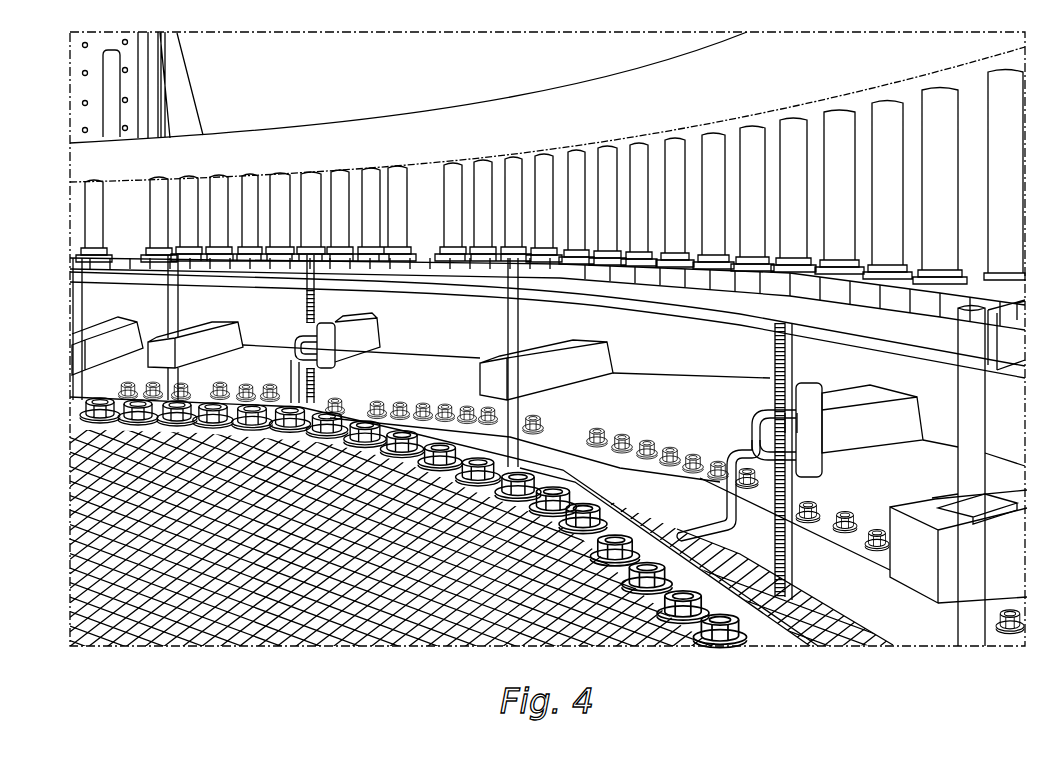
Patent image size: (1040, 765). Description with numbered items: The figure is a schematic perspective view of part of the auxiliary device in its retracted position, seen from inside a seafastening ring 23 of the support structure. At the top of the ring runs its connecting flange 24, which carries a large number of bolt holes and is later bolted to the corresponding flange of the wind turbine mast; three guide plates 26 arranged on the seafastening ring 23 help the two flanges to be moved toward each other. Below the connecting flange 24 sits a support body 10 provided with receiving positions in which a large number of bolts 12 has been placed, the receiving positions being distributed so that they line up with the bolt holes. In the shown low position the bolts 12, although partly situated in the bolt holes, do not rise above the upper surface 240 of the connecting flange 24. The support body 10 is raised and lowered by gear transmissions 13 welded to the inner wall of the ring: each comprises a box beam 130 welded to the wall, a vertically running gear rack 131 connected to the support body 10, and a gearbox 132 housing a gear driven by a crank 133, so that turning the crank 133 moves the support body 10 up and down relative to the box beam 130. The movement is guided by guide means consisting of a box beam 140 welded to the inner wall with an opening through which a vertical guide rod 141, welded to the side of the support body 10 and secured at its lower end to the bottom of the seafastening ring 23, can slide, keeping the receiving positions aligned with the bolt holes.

The support body 10 is at (875, 323).
The bolt 12 is at (280, 193).
The gear transmission 13 is at (726, 461).
The seafastening ring 23 is at (453, 337).
The connecting flange 24 is at (495, 133).
The guide plate 26 is at (90, 89).
The box beam 130 is at (863, 430).
The gear rack 131 is at (770, 352).
The gearbox 132 is at (760, 428).
The crank 133 is at (713, 530).
The box beam 140 is at (557, 372).
The guide rod 141 is at (518, 312).
The upper surface 240 is at (365, 117).